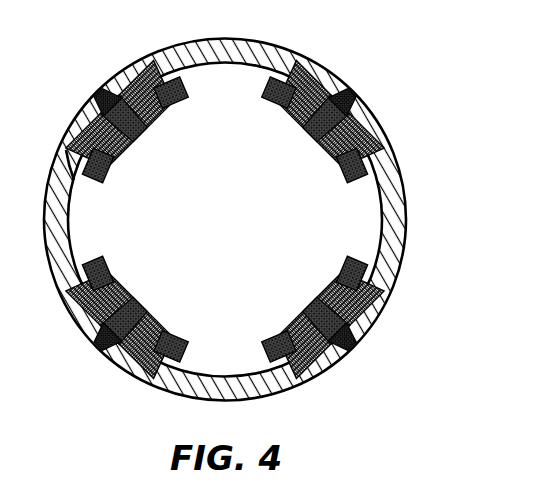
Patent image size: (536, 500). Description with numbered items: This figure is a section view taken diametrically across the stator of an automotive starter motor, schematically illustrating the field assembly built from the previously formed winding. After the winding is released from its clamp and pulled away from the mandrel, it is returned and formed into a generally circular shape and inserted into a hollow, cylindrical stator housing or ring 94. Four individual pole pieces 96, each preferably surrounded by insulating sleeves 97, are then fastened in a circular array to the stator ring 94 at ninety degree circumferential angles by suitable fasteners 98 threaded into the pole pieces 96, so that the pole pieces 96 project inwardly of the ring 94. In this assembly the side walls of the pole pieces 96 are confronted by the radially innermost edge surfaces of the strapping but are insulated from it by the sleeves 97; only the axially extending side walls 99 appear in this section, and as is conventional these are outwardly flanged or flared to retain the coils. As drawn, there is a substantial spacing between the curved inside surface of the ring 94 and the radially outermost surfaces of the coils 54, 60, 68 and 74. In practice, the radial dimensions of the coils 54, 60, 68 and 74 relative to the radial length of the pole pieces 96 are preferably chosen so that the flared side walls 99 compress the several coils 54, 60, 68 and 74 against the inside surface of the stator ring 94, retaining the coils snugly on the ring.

The stator housing or ring 94 is at (269, 47).
The fasteners 98 is at (107, 86).
The axially extending side walls 99 is at (191, 89).
The pole pieces 96 is at (165, 114).
The coil 60 is at (252, 95).
The insulating sleeves 97 is at (362, 151).
The coil 68 is at (68, 164).
The coil 74 is at (107, 246).
The coil 54 is at (351, 244).